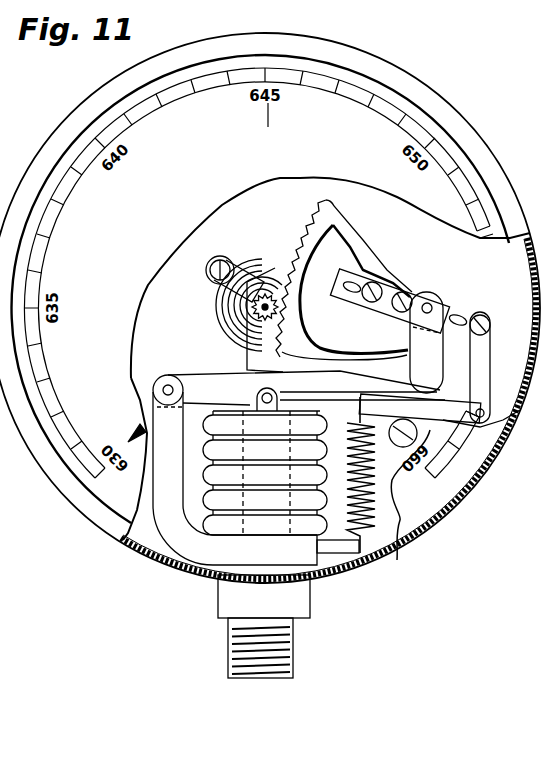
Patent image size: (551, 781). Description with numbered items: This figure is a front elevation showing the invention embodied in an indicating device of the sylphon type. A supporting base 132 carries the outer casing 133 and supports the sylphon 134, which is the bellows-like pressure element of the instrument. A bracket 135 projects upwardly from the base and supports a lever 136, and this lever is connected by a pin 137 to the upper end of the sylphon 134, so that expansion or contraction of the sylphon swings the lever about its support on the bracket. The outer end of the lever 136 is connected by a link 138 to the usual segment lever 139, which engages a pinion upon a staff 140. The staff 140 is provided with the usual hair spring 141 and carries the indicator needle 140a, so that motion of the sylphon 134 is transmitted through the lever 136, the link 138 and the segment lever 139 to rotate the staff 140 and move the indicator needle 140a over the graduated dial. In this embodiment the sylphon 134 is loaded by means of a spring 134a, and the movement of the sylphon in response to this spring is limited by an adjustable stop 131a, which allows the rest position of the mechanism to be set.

The adjustable stop 131a is at (402, 400).
The supporting base 132 is at (303, 608).
The outer casing 133 is at (366, 548).
The sylphon 134 is at (227, 510).
The spring 134a is at (373, 507).
The bracket 135 is at (163, 478).
The lever 136 is at (230, 376).
The pin 137 is at (280, 393).
The link 138 is at (485, 372).
The segment lever 139 is at (363, 243).
The staff 140 is at (264, 320).
The indicator needle 140a is at (135, 428).
The hair spring 141 is at (216, 319).